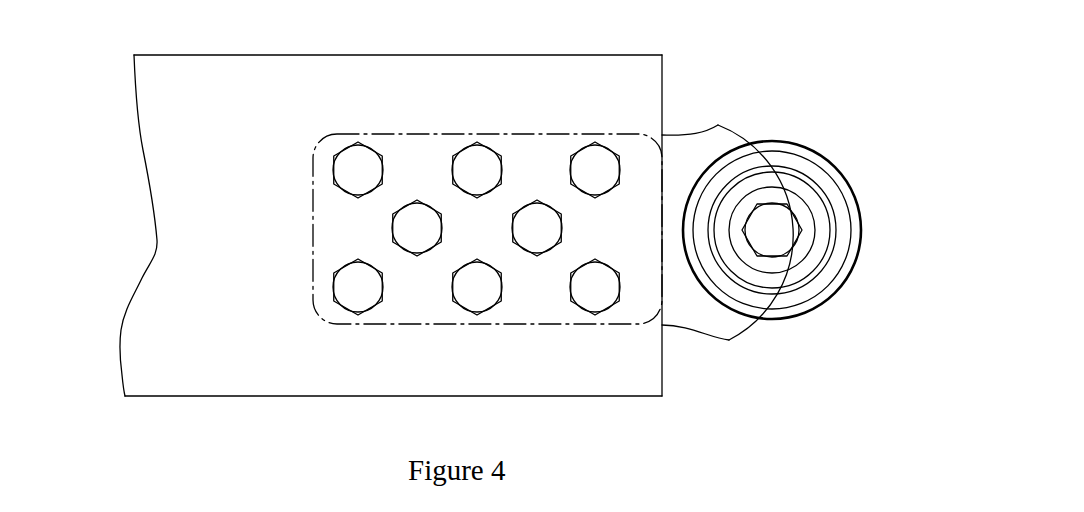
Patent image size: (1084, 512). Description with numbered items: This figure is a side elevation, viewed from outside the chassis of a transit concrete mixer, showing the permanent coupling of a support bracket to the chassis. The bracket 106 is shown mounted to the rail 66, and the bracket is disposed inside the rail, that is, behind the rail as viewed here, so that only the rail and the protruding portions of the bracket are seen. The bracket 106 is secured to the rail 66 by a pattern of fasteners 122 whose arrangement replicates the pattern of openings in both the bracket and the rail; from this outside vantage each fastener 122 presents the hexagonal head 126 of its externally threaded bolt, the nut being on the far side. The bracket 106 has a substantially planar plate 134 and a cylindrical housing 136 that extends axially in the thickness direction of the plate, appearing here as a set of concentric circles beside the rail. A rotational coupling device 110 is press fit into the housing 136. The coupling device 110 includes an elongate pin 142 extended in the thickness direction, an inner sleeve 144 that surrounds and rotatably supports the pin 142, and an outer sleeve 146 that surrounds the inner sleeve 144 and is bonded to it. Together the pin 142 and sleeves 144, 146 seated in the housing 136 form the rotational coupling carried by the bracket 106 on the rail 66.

The rail 66 is at (162, 116).
The bracket 106 is at (683, 142).
The rotational coupling device 110 is at (792, 168).
The fasteners 122 is at (472, 302).
The hexagonal head 126 is at (362, 165).
The plate 134 is at (693, 317).
The cylindrical housing 136 is at (797, 300).
The pin 142 is at (780, 223).
The inner sleeve 144 is at (823, 225).
The outer sleeve 146 is at (825, 258).